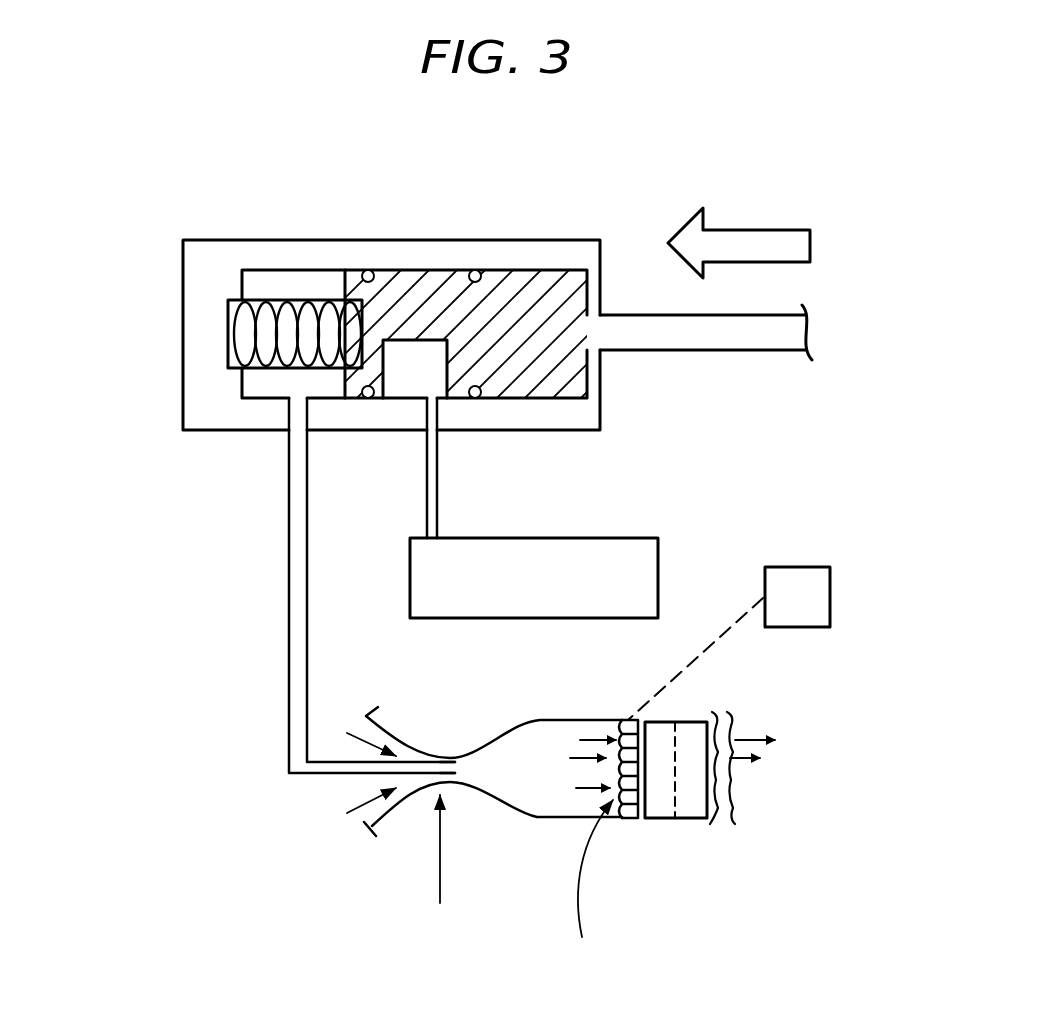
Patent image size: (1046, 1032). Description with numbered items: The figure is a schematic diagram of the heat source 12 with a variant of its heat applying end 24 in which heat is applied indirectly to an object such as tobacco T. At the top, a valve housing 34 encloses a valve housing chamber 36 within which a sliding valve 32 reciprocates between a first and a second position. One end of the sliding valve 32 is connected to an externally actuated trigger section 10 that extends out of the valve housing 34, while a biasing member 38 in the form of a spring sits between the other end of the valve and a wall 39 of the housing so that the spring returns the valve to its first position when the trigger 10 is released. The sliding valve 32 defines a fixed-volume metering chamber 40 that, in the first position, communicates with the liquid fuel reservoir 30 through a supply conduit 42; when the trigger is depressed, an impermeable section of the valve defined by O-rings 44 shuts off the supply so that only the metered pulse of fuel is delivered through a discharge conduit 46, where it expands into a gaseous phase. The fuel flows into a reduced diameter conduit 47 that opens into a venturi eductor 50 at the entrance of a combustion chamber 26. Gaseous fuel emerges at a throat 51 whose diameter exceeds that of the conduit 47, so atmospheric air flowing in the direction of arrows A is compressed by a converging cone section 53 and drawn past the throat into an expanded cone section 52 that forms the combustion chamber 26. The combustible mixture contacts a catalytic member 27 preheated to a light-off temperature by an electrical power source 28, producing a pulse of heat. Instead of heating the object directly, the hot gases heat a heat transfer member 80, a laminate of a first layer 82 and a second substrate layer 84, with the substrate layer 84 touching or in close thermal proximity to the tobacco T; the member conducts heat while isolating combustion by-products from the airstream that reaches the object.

The trigger section 10 is at (765, 335).
The heat source 12 is at (170, 227).
The heat applying end 24 is at (614, 842).
The combustion chamber 26 is at (565, 750).
The catalytic member 27 is at (588, 889).
The electrical power source 28 is at (810, 595).
The liquid fuel reservoir 30 is at (635, 577).
The sliding valve 32 is at (572, 372).
The valve housing 34 is at (535, 253).
The valve housing chamber 36 is at (277, 283).
The biasing member 38 is at (287, 378).
The wall 39 is at (227, 333).
The metering chamber 40 is at (403, 380).
The supply conduit 42 is at (437, 480).
The O-rings 44 is at (368, 275).
The discharge conduit 46 is at (288, 602).
The reduced diameter conduit 47 is at (333, 773).
The venturi eductor 50 is at (436, 870).
The throat 51 is at (447, 757).
The expanded cone section 52 is at (521, 808).
The converging cone section 53 is at (397, 810).
The heat transfer member 80 is at (694, 704).
The first layer 82 is at (660, 818).
The second substrate layer 84 is at (692, 818).
The arrows A is at (358, 778).
The tobacco T is at (731, 793).